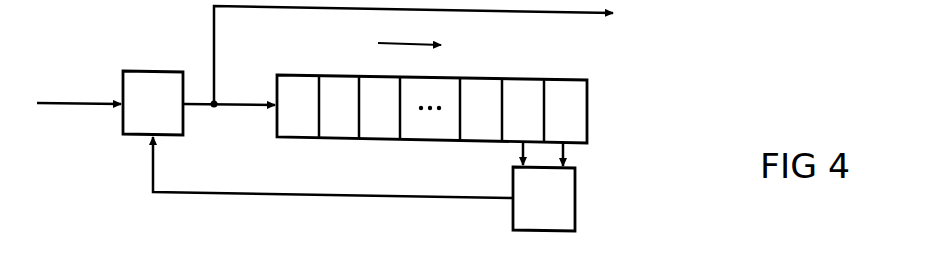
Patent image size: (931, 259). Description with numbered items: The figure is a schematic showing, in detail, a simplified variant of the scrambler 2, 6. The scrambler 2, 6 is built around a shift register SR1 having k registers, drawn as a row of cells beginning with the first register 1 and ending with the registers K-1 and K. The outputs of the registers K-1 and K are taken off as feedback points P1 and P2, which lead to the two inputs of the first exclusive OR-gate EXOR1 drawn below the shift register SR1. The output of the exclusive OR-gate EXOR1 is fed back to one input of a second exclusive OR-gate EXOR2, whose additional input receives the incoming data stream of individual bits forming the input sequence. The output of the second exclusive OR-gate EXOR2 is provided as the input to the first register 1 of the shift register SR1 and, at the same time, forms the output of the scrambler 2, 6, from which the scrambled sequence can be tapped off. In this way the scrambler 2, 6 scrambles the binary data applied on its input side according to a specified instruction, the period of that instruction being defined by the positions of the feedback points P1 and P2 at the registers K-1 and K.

The scrambler 2 is at (492, 93).
The scrambler 6 is at (492, 93).
The shift register SR1 is at (665, 129).
The exclusive OR-gate EXOR1 is at (565, 211).
The second exclusive OR-gate EXOR2 is at (170, 125).
The feedback point P1 is at (520, 153).
The feedback point P2 is at (567, 152).
The first register 1 is at (297, 78).
The register k-1 K-1 is at (525, 87).
The register k K is at (567, 86).